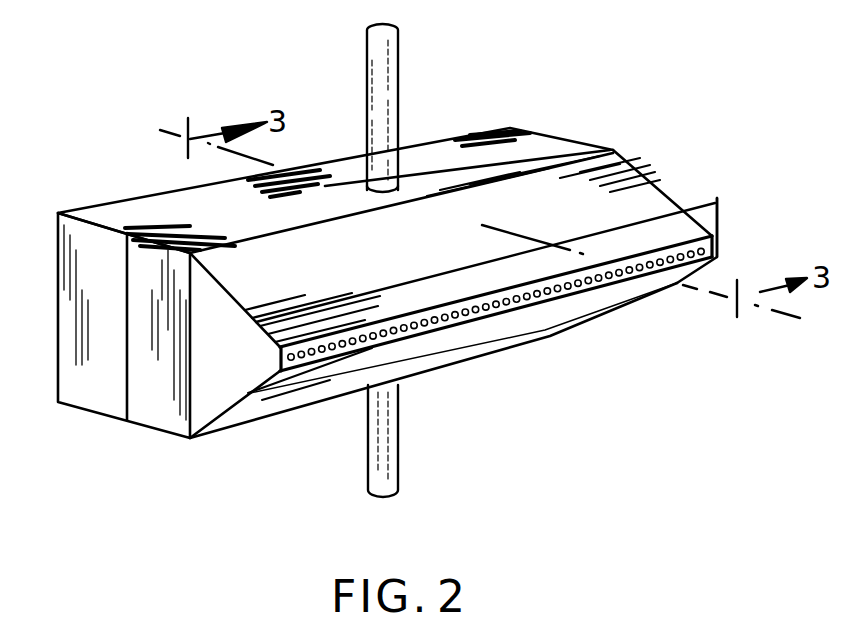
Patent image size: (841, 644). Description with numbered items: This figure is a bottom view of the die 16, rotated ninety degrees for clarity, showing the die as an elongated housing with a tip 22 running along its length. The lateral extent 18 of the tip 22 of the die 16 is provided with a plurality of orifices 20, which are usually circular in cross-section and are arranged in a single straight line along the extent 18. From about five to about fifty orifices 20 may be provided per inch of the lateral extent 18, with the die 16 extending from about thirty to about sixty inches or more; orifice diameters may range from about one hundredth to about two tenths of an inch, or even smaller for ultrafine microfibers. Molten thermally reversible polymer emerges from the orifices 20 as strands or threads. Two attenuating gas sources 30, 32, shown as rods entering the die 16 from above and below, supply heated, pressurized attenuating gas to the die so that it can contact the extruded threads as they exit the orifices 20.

The die 16 is at (142, 368).
The lateral extent 18 is at (664, 215).
The orifices 20 is at (556, 303).
The tip 22 is at (603, 283).
The attenuating gas source 30 is at (392, 95).
The attenuating gas source 32 is at (400, 423).